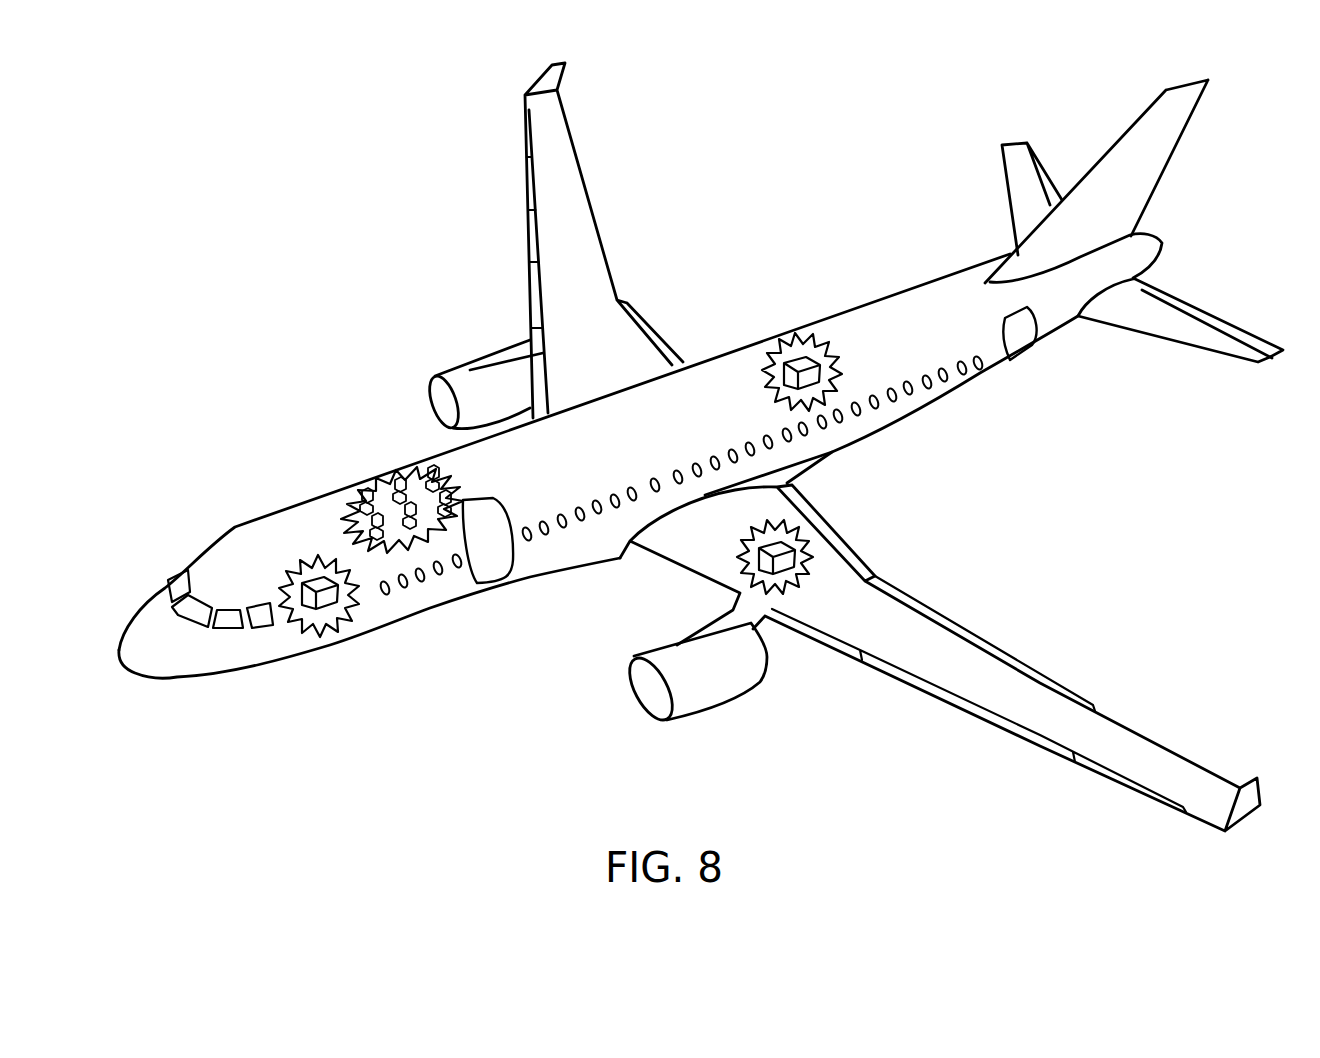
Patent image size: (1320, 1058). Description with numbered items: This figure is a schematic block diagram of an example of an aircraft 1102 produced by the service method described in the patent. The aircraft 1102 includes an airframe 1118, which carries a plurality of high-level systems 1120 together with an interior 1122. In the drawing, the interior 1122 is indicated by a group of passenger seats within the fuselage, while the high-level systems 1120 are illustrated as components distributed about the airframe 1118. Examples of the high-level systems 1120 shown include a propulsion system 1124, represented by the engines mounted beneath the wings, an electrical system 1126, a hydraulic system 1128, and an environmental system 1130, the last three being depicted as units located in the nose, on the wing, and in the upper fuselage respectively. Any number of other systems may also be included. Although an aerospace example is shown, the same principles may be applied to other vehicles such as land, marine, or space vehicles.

The aircraft 1102 is at (701, 447).
The airframe 1118 is at (360, 495).
The high-level systems 1120 is at (1058, 521).
The interior 1122 is at (352, 503).
The propulsion system 1124 is at (457, 368).
The electrical system 1126 is at (308, 576).
The hydraulic system 1128 is at (790, 541).
The environmental system 1130 is at (794, 352).